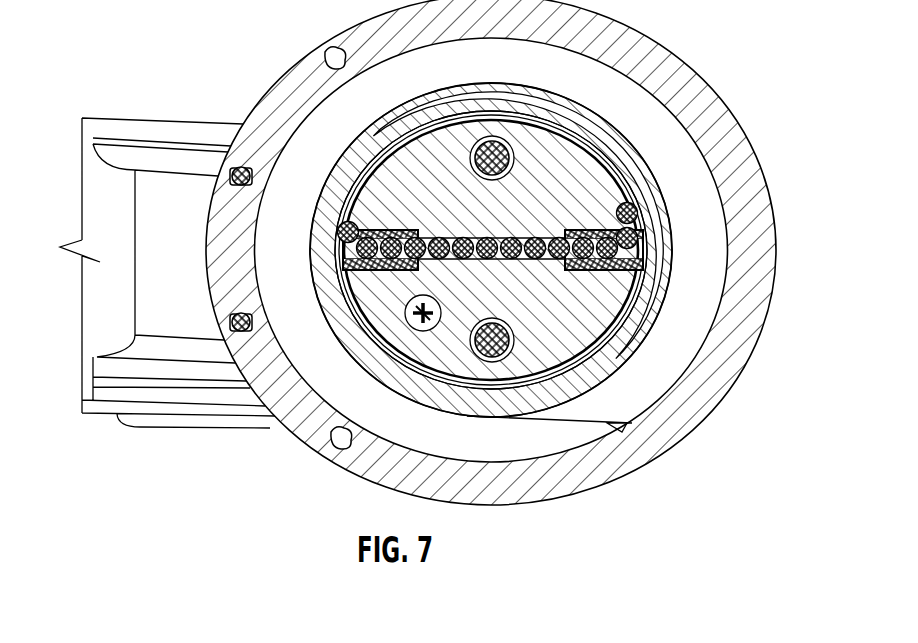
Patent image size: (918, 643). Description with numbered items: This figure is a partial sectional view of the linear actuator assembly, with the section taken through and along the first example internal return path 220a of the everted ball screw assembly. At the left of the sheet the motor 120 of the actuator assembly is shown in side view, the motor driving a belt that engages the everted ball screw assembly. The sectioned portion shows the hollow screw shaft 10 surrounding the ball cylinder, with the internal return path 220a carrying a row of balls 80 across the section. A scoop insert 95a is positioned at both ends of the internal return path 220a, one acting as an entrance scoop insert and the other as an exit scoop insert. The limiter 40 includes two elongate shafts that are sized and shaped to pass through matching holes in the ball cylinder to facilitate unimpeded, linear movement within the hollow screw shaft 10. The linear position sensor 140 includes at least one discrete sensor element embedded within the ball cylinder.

The hollow screw shaft 10 is at (470, 84).
The limiter 40 is at (494, 137).
The bearing ball 80 is at (633, 205).
The scoop insert 95a is at (343, 253).
The motor 120 is at (90, 170).
The linear position sensor 140 is at (423, 332).
The first example internal return path 220a is at (410, 140).